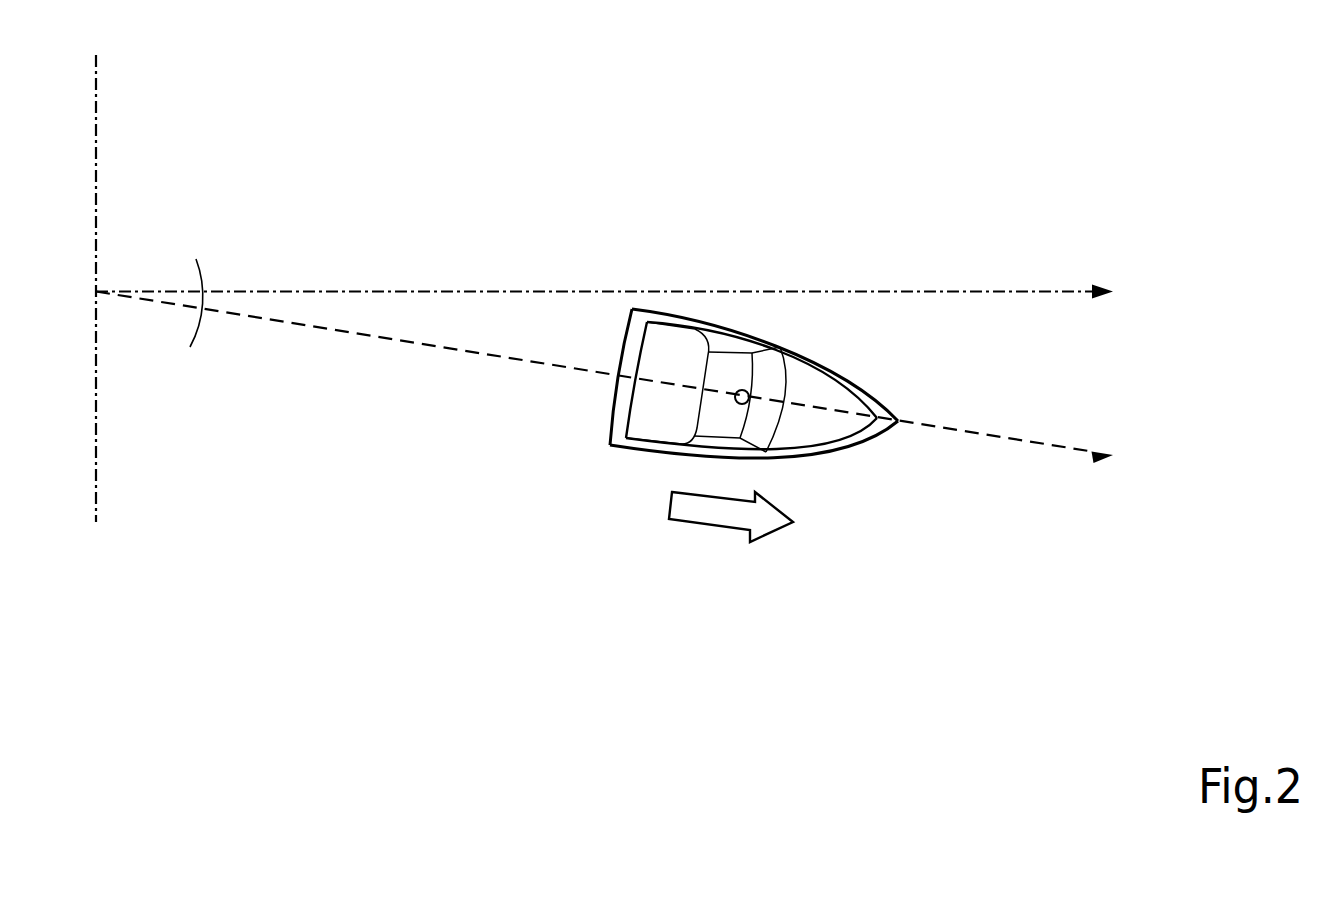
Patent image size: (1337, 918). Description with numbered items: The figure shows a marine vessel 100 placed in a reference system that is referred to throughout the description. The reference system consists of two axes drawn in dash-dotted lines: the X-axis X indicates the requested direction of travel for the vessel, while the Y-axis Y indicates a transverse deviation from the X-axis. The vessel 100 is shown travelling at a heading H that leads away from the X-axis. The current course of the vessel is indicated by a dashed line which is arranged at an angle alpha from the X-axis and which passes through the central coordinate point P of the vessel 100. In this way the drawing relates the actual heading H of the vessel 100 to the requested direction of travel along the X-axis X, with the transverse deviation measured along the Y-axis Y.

The vessel 100 is at (612, 461).
The central coordinate point P is at (742, 404).
The heading H is at (731, 532).
The X-axis X is at (604, 274).
The Y-axis Y is at (82, 288).